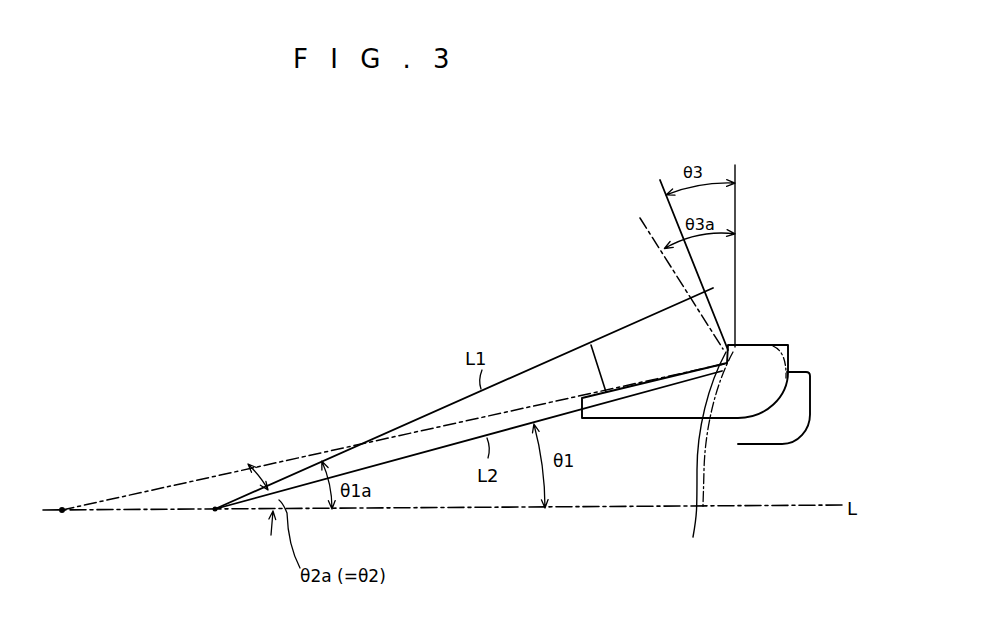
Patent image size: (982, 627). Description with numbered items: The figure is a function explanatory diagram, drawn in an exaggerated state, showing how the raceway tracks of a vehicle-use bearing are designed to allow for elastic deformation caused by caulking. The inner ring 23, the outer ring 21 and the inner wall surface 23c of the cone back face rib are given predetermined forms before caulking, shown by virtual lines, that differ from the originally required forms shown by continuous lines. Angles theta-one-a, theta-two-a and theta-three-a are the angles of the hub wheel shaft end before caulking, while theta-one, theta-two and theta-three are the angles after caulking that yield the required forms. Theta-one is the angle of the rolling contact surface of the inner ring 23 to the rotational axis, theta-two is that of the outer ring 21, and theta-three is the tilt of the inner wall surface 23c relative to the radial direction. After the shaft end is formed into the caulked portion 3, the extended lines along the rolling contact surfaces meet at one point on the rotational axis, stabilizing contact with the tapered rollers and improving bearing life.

The outer ring 21 is at (714, 290).
The inner ring 23 is at (788, 345).
The inner wall surface 23c is at (704, 459).
The caulked portion 3 is at (803, 404).